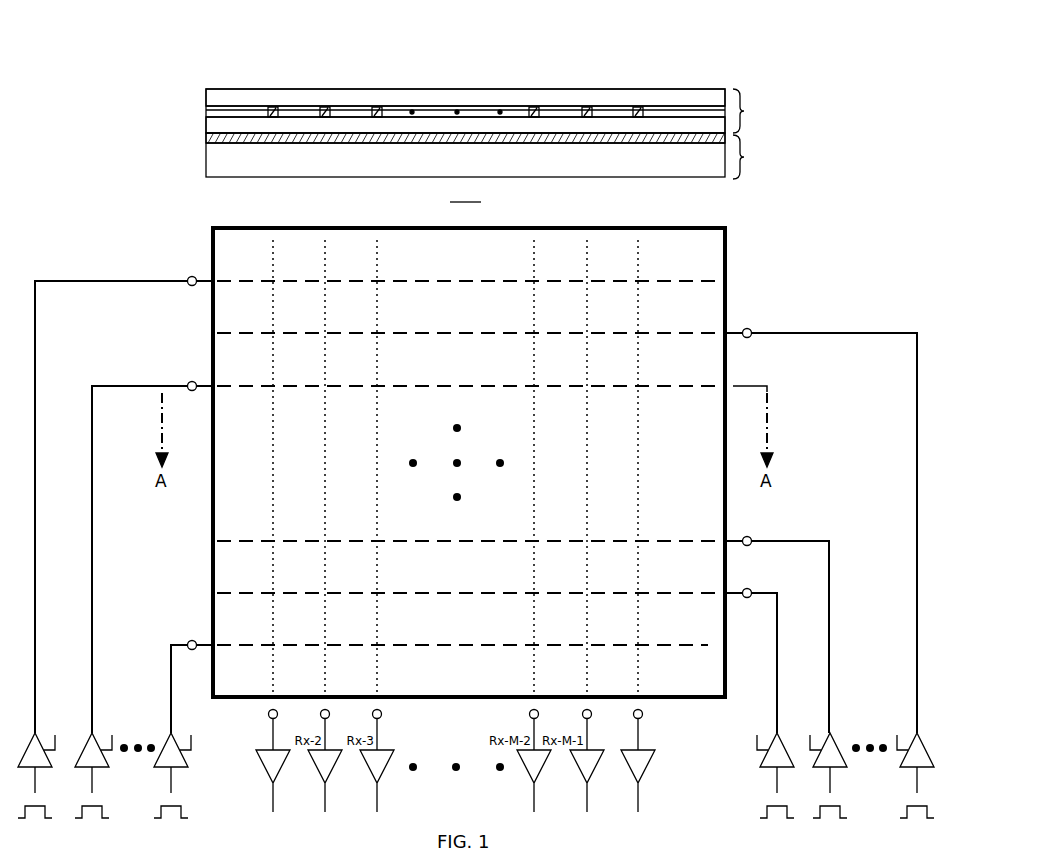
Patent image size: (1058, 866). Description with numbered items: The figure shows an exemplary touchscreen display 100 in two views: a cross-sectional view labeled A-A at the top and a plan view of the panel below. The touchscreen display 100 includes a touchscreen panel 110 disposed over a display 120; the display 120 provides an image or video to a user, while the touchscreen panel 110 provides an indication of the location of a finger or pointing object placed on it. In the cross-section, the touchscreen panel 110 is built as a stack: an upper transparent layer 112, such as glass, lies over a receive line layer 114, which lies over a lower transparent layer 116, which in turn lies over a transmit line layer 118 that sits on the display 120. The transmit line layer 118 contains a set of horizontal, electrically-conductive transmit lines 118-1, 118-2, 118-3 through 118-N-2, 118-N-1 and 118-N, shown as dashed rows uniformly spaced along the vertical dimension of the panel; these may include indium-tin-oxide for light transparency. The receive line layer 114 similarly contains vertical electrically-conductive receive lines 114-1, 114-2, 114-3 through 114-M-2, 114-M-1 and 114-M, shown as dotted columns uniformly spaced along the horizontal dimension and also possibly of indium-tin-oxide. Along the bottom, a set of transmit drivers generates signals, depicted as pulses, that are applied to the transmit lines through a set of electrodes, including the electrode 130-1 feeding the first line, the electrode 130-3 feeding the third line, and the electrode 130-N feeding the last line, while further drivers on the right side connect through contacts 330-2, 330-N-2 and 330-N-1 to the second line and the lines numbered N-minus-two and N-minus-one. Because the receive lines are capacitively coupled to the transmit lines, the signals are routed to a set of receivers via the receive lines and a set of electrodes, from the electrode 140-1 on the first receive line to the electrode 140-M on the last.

The touchscreen display 100 is at (478, 55).
The touchscreen panel 110 is at (733, 281).
The upper transparent layer 112 is at (213, 100).
The receive line layer 114 is at (260, 110).
The receive line 114-1 is at (273, 110).
The receive line 114-2 is at (325, 465).
The receive line 114-3 is at (376, 405).
The receive line 114-M-2 is at (536, 405).
The receive line 114-M-1 is at (588, 442).
The receive line 114-M is at (639, 110).
The lower transparent layer 116 is at (213, 125).
The transmit line layer 118 is at (206, 137).
The transmit line 118-1 is at (430, 281).
The transmit line 118-2 is at (430, 333).
The transmit line 118-3 is at (280, 137).
The transmit line 118-N-2 is at (430, 541).
The transmit line 118-N-1 is at (430, 593).
The transmit line 118-N is at (430, 645).
The display 120 is at (768, 158).
The electrode 130-1 is at (192, 277).
The electrode 130-3 is at (192, 382).
The electrode 130-N is at (192, 641).
The transmit driver for row 2 330-2 is at (747, 329).
The transmit driver for row N-2 330-N-2 is at (747, 537).
The transmit driver for row N-1 330-N-1 is at (747, 589).
The electrode 140-1 is at (268, 716).
The electrode 140-M is at (644, 716).